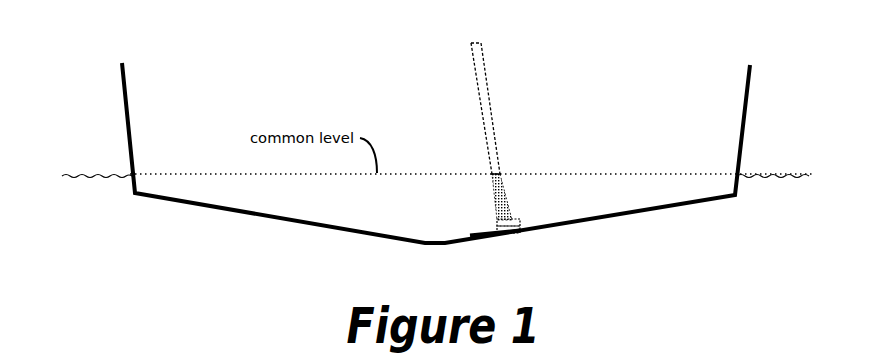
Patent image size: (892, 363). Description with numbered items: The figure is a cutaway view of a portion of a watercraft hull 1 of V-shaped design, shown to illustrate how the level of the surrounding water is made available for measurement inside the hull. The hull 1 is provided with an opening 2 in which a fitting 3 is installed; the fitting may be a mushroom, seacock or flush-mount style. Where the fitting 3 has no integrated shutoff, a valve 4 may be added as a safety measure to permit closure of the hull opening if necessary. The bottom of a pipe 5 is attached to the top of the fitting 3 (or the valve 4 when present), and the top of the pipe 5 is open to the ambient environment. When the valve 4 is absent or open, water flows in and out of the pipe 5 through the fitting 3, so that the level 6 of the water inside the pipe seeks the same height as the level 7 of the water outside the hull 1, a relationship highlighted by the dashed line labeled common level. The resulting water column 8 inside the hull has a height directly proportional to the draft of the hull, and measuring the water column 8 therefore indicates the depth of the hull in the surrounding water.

The hull 1 is at (235, 213).
The opening 2 is at (495, 232).
The fitting 3 is at (517, 230).
The valve 4 is at (515, 218).
The pipe 5 is at (493, 105).
The level of the water in pipe 6 is at (500, 170).
The level of the water outside of hull 7 is at (67, 177).
The water column 8 is at (500, 190).